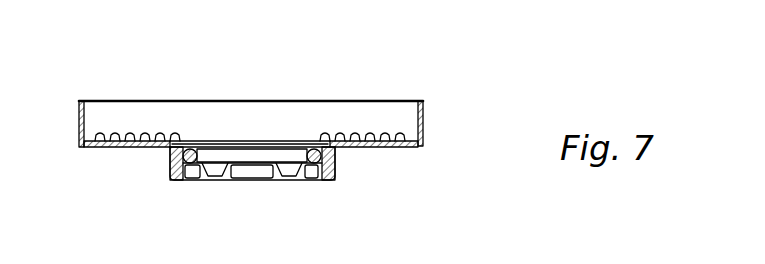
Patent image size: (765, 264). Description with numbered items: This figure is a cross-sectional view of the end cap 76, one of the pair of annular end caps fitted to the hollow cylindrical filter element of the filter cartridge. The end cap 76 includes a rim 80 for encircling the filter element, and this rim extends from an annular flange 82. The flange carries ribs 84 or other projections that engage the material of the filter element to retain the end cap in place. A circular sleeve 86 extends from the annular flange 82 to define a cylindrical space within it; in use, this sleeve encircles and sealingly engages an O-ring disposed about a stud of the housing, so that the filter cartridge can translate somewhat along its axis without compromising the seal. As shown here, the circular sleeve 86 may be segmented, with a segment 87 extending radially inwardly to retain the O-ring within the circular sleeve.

The end cap 76 is at (114, 100).
The rim 80 is at (425, 112).
The annular flange 82 is at (373, 147).
The ribs 84 is at (387, 128).
The circular sleeve 86 is at (171, 150).
The segment 87 is at (291, 177).